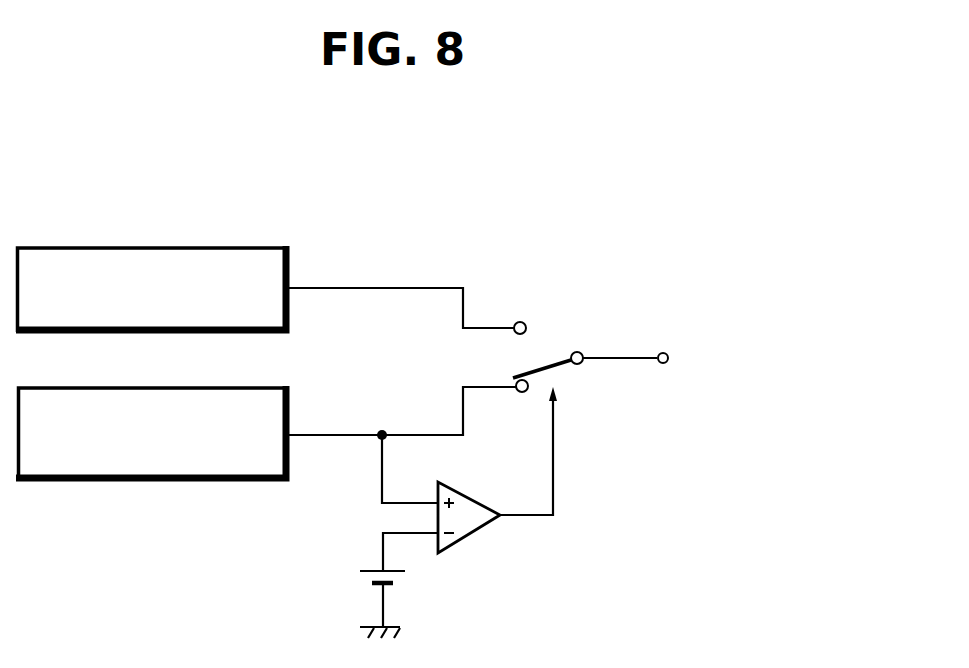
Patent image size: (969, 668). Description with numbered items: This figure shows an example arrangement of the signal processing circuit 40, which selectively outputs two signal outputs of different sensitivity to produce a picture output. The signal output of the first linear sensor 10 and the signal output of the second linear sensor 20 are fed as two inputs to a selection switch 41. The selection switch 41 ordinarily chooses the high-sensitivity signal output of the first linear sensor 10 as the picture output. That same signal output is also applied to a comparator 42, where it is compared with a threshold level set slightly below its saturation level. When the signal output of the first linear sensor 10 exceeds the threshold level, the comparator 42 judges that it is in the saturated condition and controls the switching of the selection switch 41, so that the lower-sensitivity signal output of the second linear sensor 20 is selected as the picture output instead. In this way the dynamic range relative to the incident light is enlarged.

The first linear sensor 10 is at (227, 388).
The second linear sensor 20 is at (225, 247).
The signal processing circuit 40 is at (592, 265).
The selection switch 41 is at (548, 352).
The comparator 42 is at (468, 528).